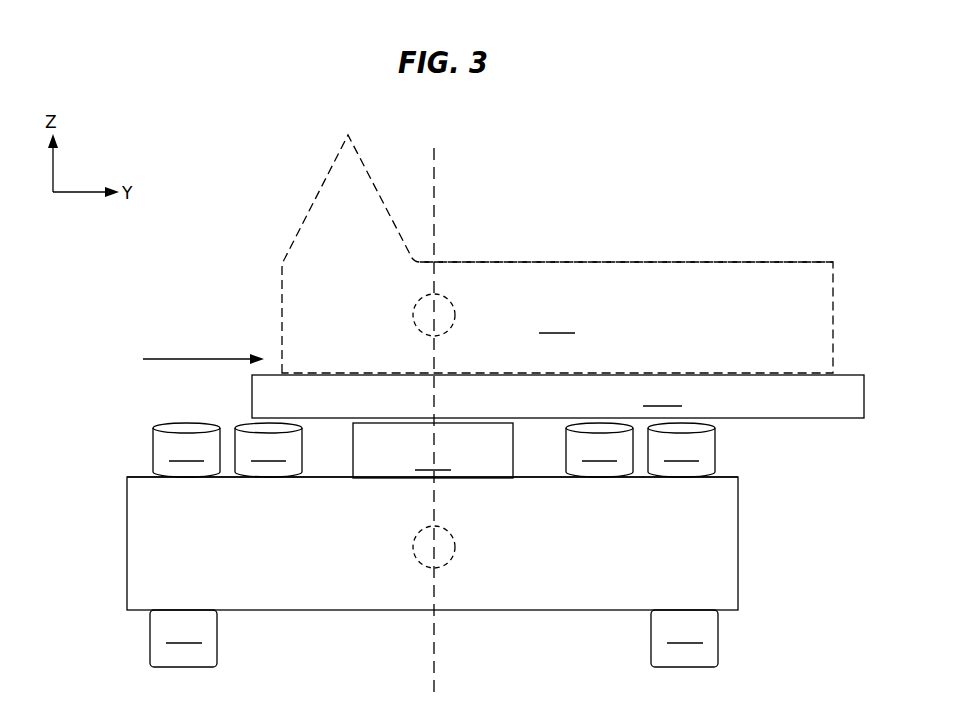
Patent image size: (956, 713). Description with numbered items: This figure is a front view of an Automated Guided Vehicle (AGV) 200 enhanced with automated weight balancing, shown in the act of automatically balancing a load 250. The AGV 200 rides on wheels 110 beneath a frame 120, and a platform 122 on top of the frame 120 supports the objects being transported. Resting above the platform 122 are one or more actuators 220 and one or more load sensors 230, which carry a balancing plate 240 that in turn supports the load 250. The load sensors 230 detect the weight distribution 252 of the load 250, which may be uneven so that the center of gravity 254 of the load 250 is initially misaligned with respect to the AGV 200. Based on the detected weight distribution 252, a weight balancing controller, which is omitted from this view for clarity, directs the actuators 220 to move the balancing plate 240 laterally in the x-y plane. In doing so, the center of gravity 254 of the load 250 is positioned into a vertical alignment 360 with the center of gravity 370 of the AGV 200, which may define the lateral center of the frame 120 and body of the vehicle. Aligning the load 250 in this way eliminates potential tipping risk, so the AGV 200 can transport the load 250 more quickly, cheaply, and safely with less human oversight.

The wheels 110 is at (434, 638).
The frame 120 is at (715, 527).
The platform 122 is at (733, 476).
The Automated Guided Vehicle 200 is at (100, 325).
The actuators 220 is at (433, 450).
The load sensors 230 is at (434, 450).
The balancing plate 240 is at (558, 396).
The load 250 is at (557, 254).
The weight distribution 252 is at (740, 262).
The center of gravity of the load 254 is at (426, 309).
The vertical alignment 360 is at (436, 188).
The center of gravity of the AGV 370 is at (423, 537).